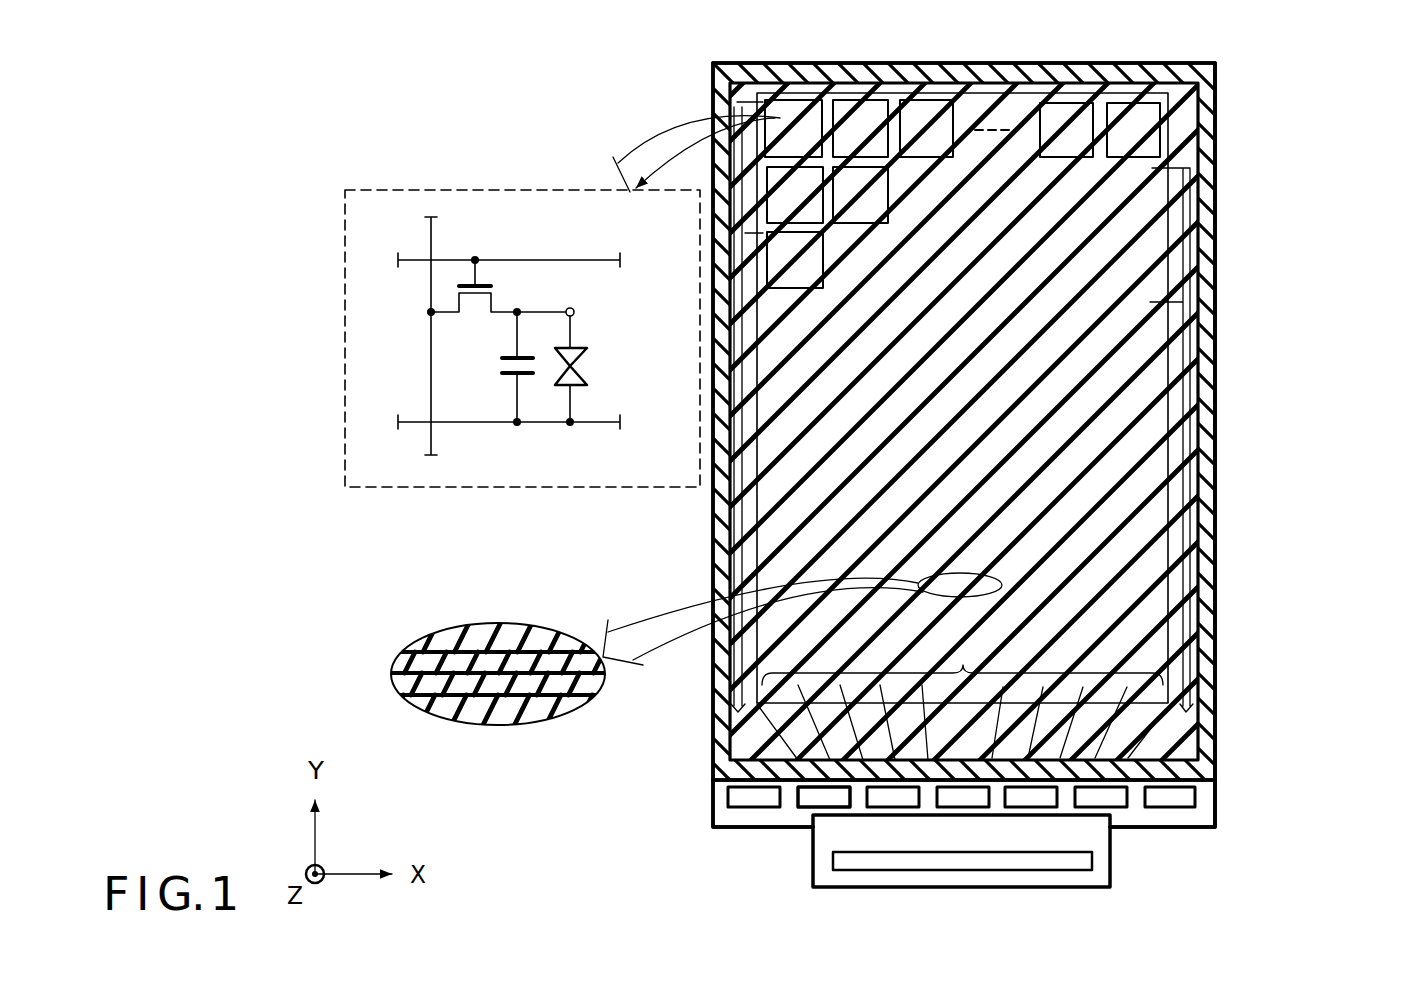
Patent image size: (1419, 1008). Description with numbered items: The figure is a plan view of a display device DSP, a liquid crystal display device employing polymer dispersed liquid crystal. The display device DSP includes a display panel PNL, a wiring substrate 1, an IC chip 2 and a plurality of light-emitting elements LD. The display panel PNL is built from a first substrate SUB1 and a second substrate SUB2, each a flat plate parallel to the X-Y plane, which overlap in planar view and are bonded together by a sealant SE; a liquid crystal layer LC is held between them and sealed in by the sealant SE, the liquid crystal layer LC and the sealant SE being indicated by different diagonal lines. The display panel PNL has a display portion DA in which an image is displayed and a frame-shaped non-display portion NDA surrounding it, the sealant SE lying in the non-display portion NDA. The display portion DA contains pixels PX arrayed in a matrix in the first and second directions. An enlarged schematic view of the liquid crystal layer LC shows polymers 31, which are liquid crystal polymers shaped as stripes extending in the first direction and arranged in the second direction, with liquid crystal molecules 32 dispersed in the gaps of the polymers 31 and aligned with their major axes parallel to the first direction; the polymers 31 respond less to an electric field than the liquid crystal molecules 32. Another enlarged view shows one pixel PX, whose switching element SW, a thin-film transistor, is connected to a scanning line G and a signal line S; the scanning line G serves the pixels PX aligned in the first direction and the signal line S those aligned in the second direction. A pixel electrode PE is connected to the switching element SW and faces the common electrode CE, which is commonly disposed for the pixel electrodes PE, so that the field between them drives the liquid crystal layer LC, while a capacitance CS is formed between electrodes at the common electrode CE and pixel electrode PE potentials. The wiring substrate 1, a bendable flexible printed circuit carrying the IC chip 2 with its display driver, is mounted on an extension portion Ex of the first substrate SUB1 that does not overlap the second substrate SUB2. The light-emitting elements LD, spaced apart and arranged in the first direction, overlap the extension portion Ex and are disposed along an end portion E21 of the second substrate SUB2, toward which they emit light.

The display device DSP is at (1305, 115).
The display panel PNL is at (1218, 60).
The non-display portion NDA is at (1216, 568).
The display portion DA is at (1173, 490).
The sealant SE is at (1205, 653).
The first substrate SUB1 is at (1205, 805).
The second substrate SUB2 is at (1205, 767).
The liquid crystal layer LC is at (591, 365).
The pixel PX is at (917, 100).
The scanning line G is at (413, 258).
The signal line S is at (398, 348).
The switching element SW is at (506, 297).
The pixel electrode PE is at (576, 312).
The capacitance CS is at (497, 367).
The common electrode CE is at (597, 424).
The polymers 31 is at (400, 688).
The liquid crystal molecules 32 is at (488, 695).
The light-emitting element LD is at (747, 798).
The extension portion Ex is at (723, 812).
The end portion E21 is at (829, 790).
The wiring substrate 1 is at (1112, 871).
The IC chip 2 is at (1020, 857).